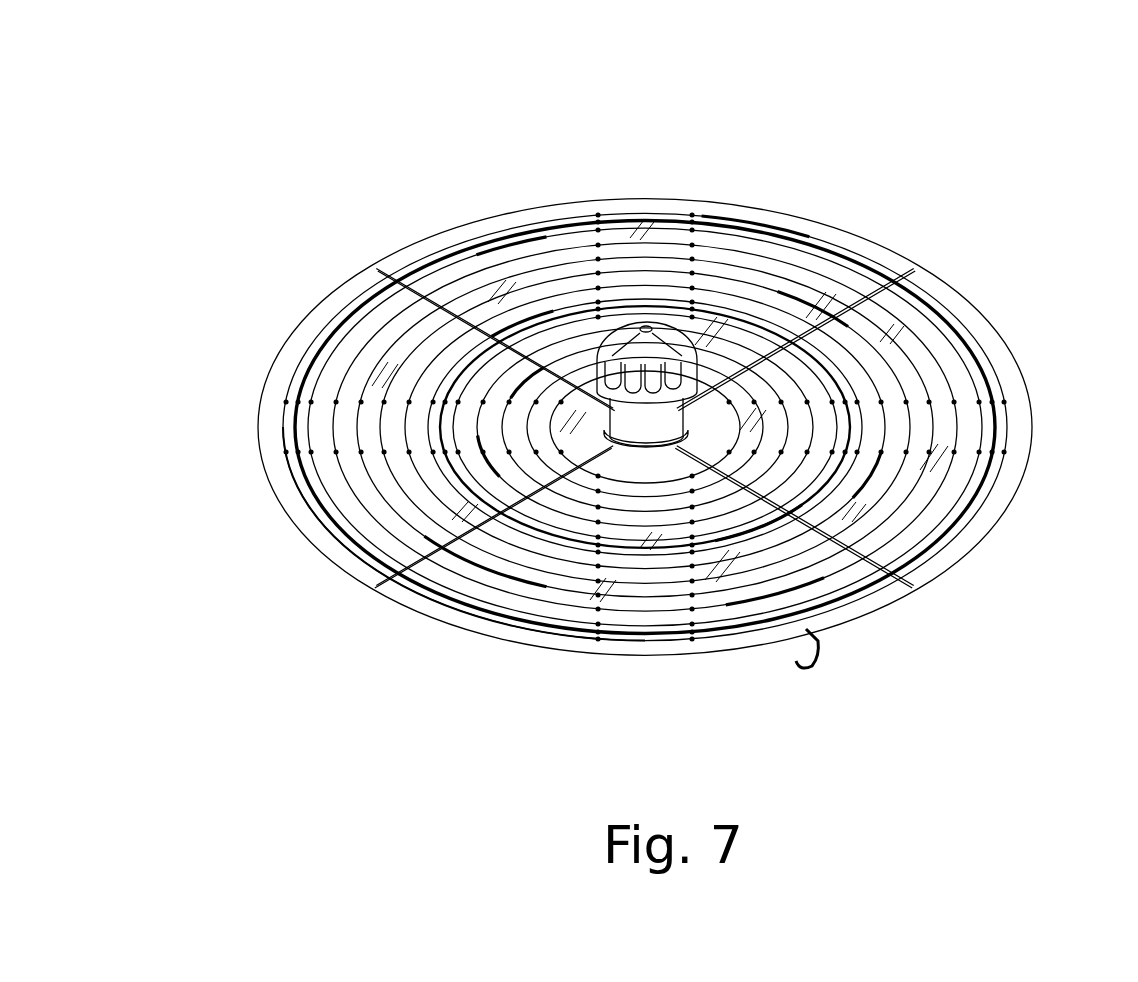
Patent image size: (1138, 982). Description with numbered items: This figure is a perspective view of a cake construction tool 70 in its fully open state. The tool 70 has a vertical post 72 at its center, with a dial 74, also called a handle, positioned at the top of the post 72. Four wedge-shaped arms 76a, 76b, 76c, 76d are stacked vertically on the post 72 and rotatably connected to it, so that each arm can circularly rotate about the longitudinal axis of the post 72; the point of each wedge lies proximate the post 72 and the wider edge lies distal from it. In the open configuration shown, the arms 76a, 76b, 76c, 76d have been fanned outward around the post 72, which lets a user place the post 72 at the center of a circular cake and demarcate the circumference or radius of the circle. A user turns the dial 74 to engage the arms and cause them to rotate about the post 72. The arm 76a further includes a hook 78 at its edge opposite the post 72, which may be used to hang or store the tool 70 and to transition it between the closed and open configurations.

The cake construction tool 70 is at (385, 197).
The vertical post 72 is at (672, 405).
The dial 74 is at (658, 330).
The wedge-shaped arm 76a is at (626, 637).
The wedge-shaped arm 76b is at (276, 427).
The wedge-shaped arm 76c is at (545, 218).
The wedge-shaped arm 76d is at (1028, 428).
The hook 78 is at (816, 652).